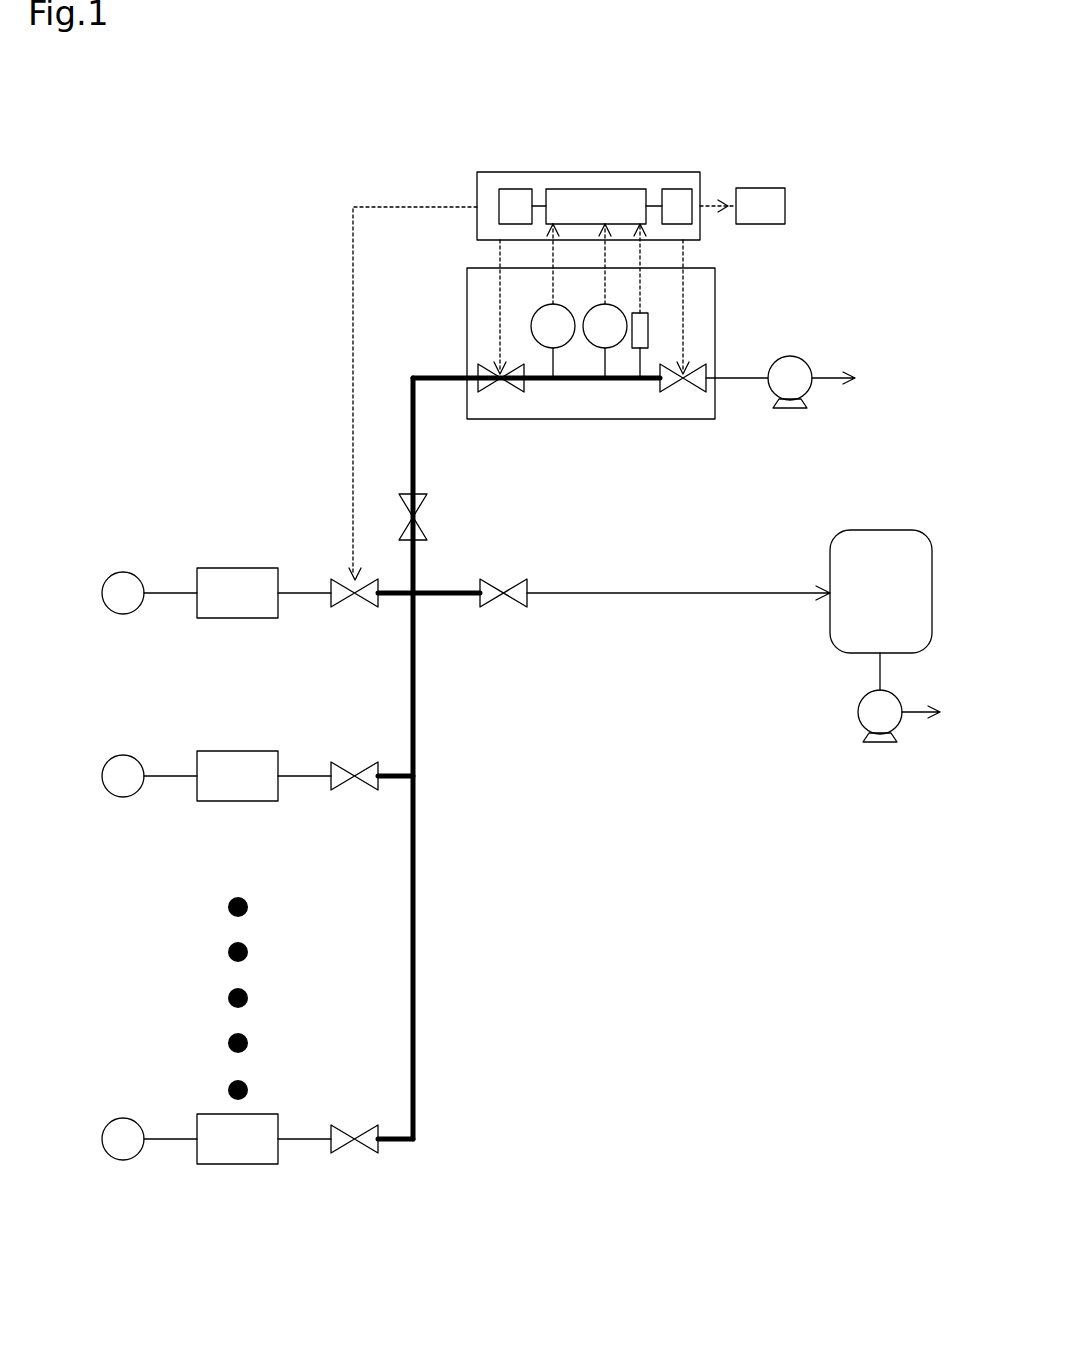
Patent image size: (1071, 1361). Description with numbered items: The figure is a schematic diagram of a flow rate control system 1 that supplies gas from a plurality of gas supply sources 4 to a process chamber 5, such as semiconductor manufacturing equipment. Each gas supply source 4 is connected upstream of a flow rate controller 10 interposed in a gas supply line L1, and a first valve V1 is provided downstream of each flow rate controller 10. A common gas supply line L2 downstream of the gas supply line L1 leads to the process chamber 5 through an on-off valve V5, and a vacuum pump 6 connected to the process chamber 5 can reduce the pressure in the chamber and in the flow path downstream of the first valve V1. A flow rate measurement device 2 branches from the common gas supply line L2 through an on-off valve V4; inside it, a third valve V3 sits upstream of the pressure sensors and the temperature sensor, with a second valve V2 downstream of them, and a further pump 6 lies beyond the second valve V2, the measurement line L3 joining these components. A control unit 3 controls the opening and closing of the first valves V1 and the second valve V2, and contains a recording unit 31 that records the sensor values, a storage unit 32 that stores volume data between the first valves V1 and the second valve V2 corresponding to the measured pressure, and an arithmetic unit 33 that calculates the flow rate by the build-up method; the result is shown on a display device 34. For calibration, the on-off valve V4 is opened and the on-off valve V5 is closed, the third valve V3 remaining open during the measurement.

The flow rate control system 1 is at (226, 293).
The flow rate measurement device 2 is at (600, 384).
The control unit 3 is at (624, 188).
The recording unit 31 is at (595, 189).
The storage unit 32 is at (512, 189).
The arithmetic unit 33 is at (677, 189).
The display device 34 is at (761, 225).
The gas supply source 4 is at (123, 614).
The flow rate controller 10 is at (235, 618).
The process chamber 5 is at (883, 529).
The vacuum pump 6 is at (790, 356).
The first valve V1 is at (368, 607).
The second valve V2 is at (692, 392).
The third valve V3 is at (512, 392).
The on-off valve V4 is at (421, 518).
The on-off valve V5 is at (512, 607).
The gas supply line L1 is at (418, 750).
The common gas supply line L2 is at (672, 594).
The measurement line L3 is at (580, 386).